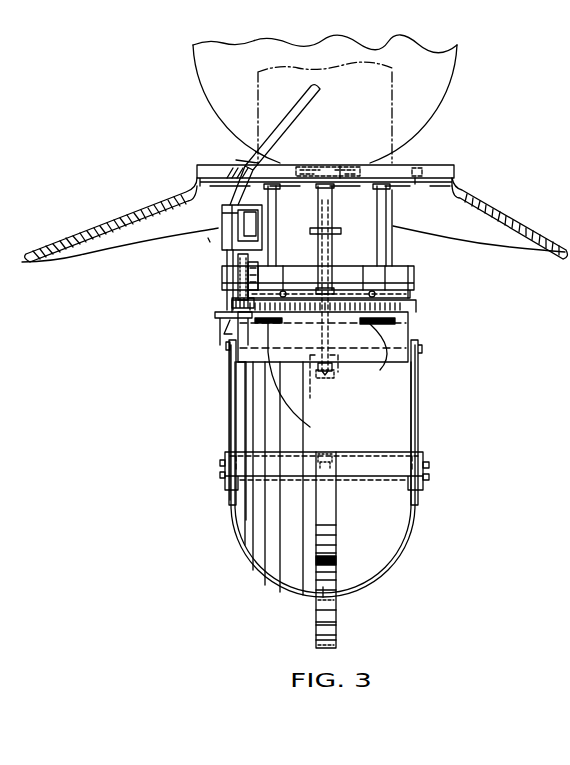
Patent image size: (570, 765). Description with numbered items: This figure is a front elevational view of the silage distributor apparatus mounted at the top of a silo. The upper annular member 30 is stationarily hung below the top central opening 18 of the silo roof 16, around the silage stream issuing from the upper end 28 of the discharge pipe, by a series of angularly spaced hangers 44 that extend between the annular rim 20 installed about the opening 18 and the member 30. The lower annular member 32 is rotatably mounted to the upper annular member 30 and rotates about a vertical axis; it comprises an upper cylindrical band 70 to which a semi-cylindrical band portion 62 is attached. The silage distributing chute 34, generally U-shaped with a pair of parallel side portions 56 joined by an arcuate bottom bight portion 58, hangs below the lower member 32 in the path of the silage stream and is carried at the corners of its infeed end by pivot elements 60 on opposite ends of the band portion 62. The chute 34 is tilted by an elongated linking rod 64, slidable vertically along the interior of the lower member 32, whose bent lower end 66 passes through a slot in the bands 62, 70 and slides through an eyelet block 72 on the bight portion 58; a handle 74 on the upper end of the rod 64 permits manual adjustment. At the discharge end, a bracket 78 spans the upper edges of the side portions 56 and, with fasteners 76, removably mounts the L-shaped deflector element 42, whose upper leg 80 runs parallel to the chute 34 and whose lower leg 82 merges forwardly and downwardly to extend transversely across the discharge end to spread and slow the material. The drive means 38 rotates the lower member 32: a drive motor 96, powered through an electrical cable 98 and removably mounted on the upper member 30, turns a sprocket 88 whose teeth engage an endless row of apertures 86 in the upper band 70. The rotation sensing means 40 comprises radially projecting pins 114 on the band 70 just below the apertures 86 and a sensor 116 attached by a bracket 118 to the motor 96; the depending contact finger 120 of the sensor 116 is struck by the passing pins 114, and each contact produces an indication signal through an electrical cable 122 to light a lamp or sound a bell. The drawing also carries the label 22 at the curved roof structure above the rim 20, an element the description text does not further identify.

The silo roof 16 is at (88, 232).
The top central opening 18 is at (415, 168).
The annular rim 20 is at (455, 170).
The bowl 22 is at (452, 72).
The upper end of discharge pipe 28 is at (392, 233).
The upper annular member 30 is at (405, 281).
The lower annular member 32 is at (396, 322).
The silage distributing chute 34 is at (418, 540).
The drive means 38 is at (208, 241).
The rotation sensing means 40 is at (208, 315).
The silage deflector element 42 is at (340, 628).
The hangers 44 is at (276, 212).
The side portions 56 is at (417, 416).
The bottom bight portion 58 is at (357, 578).
The pivot elements 60 is at (418, 350).
The semi-cylindrical band portion 62 is at (237, 377).
The linking rod 64 is at (317, 266).
The lower end of rod 66 is at (320, 372).
The upper cylindrical band 70 is at (395, 335).
The eyelet block 72 is at (291, 475).
The handle 74 is at (311, 233).
The fasteners 76 is at (221, 470).
The bracket 78 is at (380, 434).
The upper leg 80 is at (337, 508).
The lower leg 82 is at (318, 641).
The apertures 86 is at (402, 306).
The sprocket 88 is at (234, 305).
The drive motor 96 is at (222, 226).
The electrical cable 98 is at (320, 100).
The pins 114 is at (405, 318).
The sensor 116 is at (238, 292).
The bracket 118 is at (227, 262).
The contact finger 120 is at (228, 322).
The electrical cable 122 is at (240, 163).